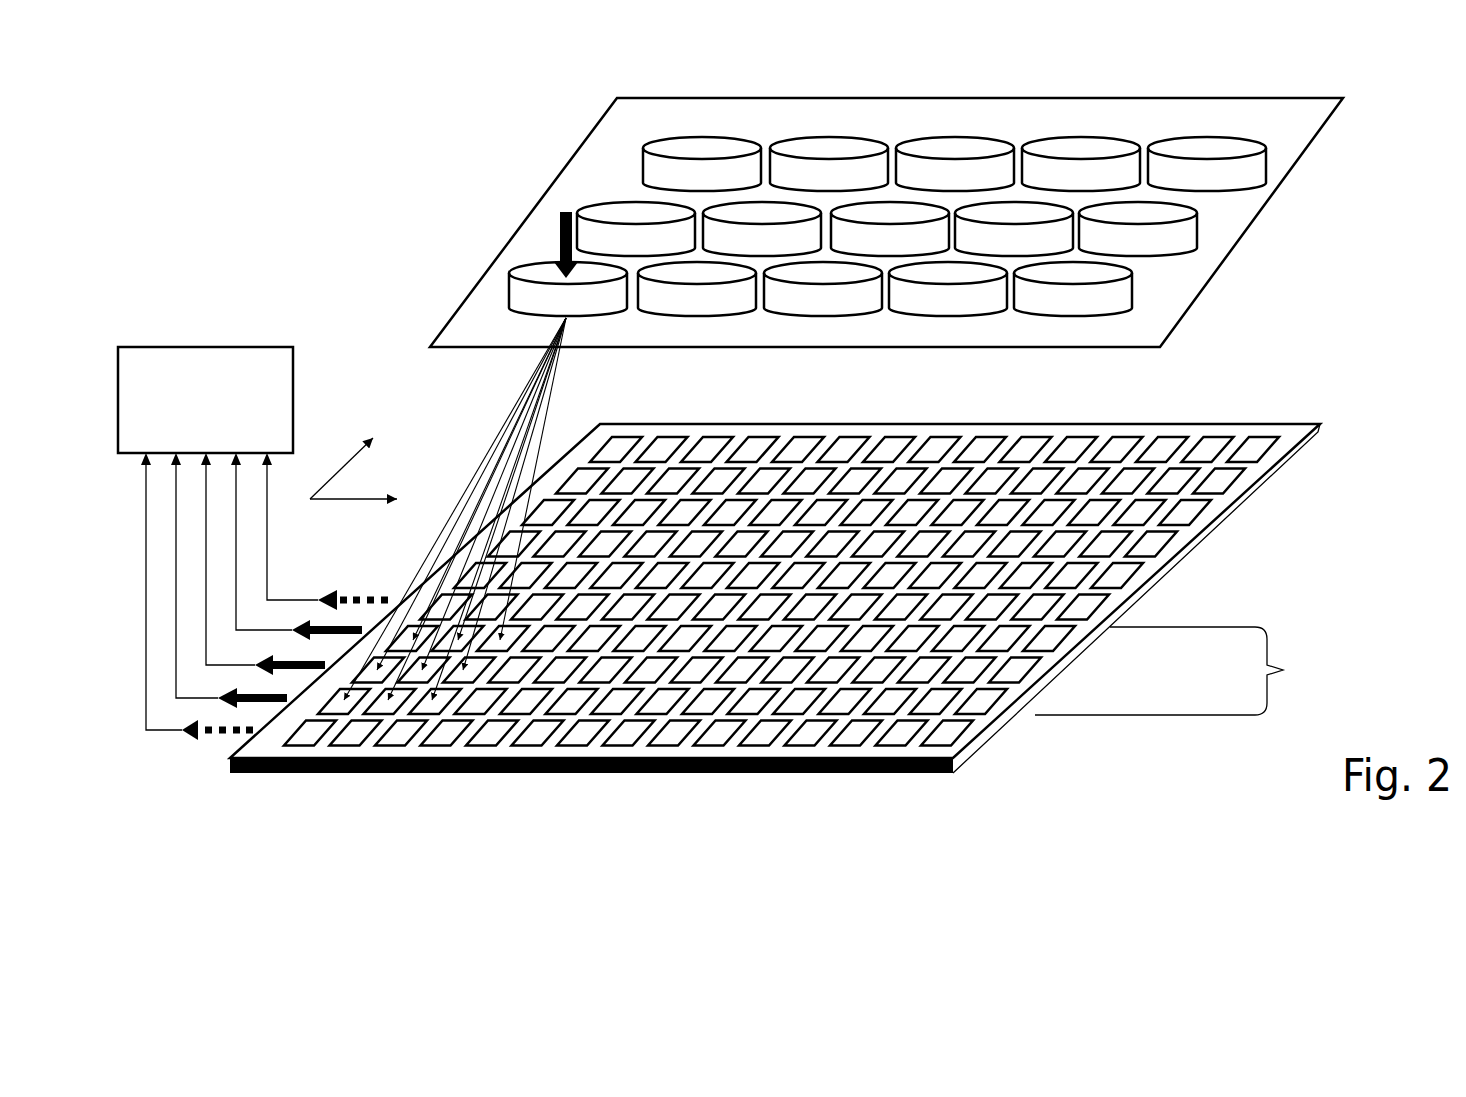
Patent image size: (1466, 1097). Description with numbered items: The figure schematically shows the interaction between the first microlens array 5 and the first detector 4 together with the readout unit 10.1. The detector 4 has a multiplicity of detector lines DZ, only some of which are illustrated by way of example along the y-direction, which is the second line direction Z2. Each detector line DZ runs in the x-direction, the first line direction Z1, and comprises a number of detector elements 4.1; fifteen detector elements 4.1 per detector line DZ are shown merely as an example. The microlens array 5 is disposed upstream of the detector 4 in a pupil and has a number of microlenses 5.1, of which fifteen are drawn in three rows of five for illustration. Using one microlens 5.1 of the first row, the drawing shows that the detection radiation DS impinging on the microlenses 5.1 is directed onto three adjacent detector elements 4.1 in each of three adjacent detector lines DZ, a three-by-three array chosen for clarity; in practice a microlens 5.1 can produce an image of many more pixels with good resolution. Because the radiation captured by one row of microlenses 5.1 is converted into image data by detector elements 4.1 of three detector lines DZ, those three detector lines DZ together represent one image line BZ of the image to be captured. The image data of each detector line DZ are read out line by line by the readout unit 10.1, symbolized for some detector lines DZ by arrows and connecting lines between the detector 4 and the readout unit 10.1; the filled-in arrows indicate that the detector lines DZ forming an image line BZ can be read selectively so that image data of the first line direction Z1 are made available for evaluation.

The first detector 4 is at (977, 744).
The detector element 4.1 is at (1248, 447).
The first microlens array 5 is at (1227, 262).
The microlens 5.1 is at (800, 313).
The readout unit 10.1 is at (247, 421).
The detection radiation DS is at (562, 247).
The detector line DZ is at (1312, 450).
The image line BZ is at (1191, 671).
The first line direction Z1 is at (378, 493).
The second line direction Z2 is at (356, 453).